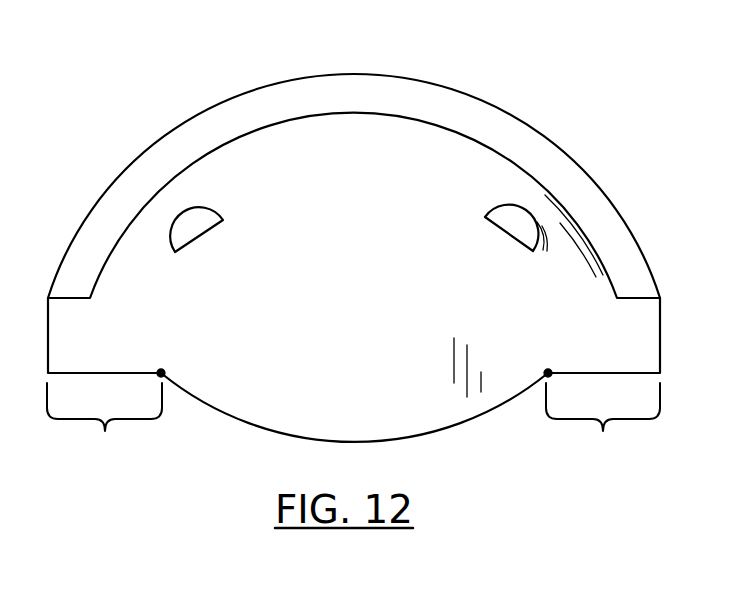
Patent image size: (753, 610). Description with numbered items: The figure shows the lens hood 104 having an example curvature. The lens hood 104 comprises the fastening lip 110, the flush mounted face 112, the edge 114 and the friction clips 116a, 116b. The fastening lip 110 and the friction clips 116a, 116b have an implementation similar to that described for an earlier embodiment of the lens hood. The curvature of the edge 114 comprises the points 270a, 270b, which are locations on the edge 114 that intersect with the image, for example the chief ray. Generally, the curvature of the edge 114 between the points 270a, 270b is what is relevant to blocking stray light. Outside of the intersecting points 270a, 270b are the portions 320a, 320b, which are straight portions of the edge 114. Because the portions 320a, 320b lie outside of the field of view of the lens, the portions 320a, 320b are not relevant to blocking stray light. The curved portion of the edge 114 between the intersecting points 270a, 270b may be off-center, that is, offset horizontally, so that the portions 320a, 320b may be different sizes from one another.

The lens hood 104 is at (120, 25).
The fastening lip 110 is at (245, 91).
The flush mounted face 112 is at (372, 280).
The edge 114 is at (438, 431).
The friction clip 116a is at (223, 217).
The friction clip 116b is at (490, 210).
The point 270a is at (161, 373).
The point 270b is at (548, 374).
The portion 320a is at (104, 423).
The portion 320b is at (603, 423).